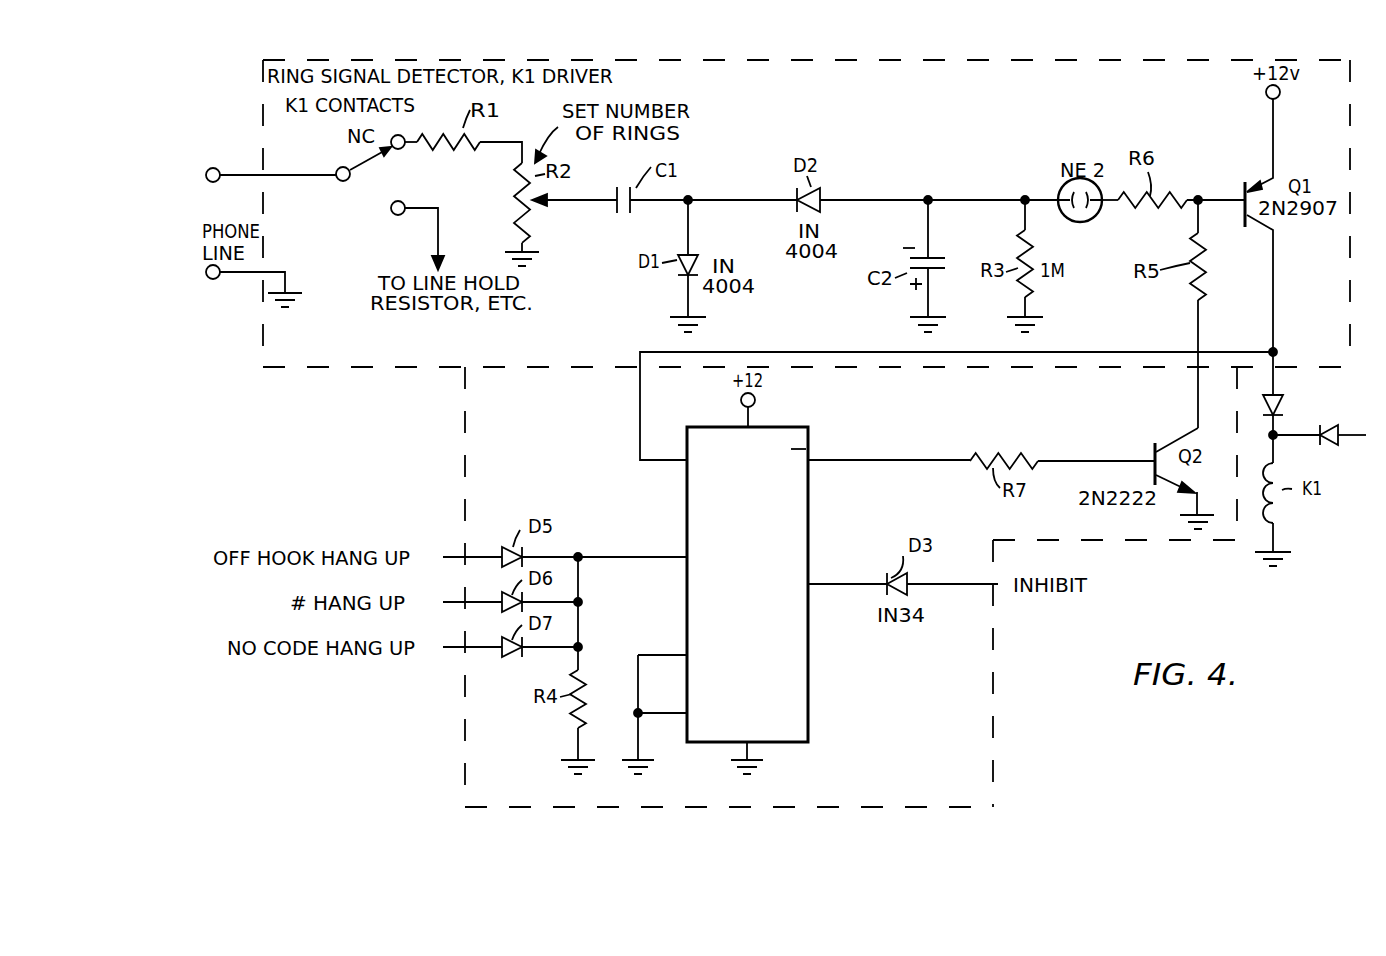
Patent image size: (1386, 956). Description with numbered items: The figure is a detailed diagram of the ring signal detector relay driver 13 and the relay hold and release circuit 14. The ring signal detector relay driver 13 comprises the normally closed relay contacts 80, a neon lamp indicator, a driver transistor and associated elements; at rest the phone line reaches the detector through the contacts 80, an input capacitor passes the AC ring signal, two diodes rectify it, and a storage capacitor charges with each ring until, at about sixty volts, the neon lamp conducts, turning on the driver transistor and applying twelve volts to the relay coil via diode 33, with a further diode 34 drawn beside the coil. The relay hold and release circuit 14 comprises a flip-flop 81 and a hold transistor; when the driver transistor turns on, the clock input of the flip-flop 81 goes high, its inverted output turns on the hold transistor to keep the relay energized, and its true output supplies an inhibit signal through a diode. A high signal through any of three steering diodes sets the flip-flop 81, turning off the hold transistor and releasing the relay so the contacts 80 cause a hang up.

The ring signal detector K1 driver 13 is at (711, 67).
The K1 hold and release circuit 14 is at (462, 738).
The relay contacts 80 is at (363, 162).
The diode 33 is at (1284, 398).
The diode 34 is at (1329, 440).
The flip-flop 81 is at (803, 638).